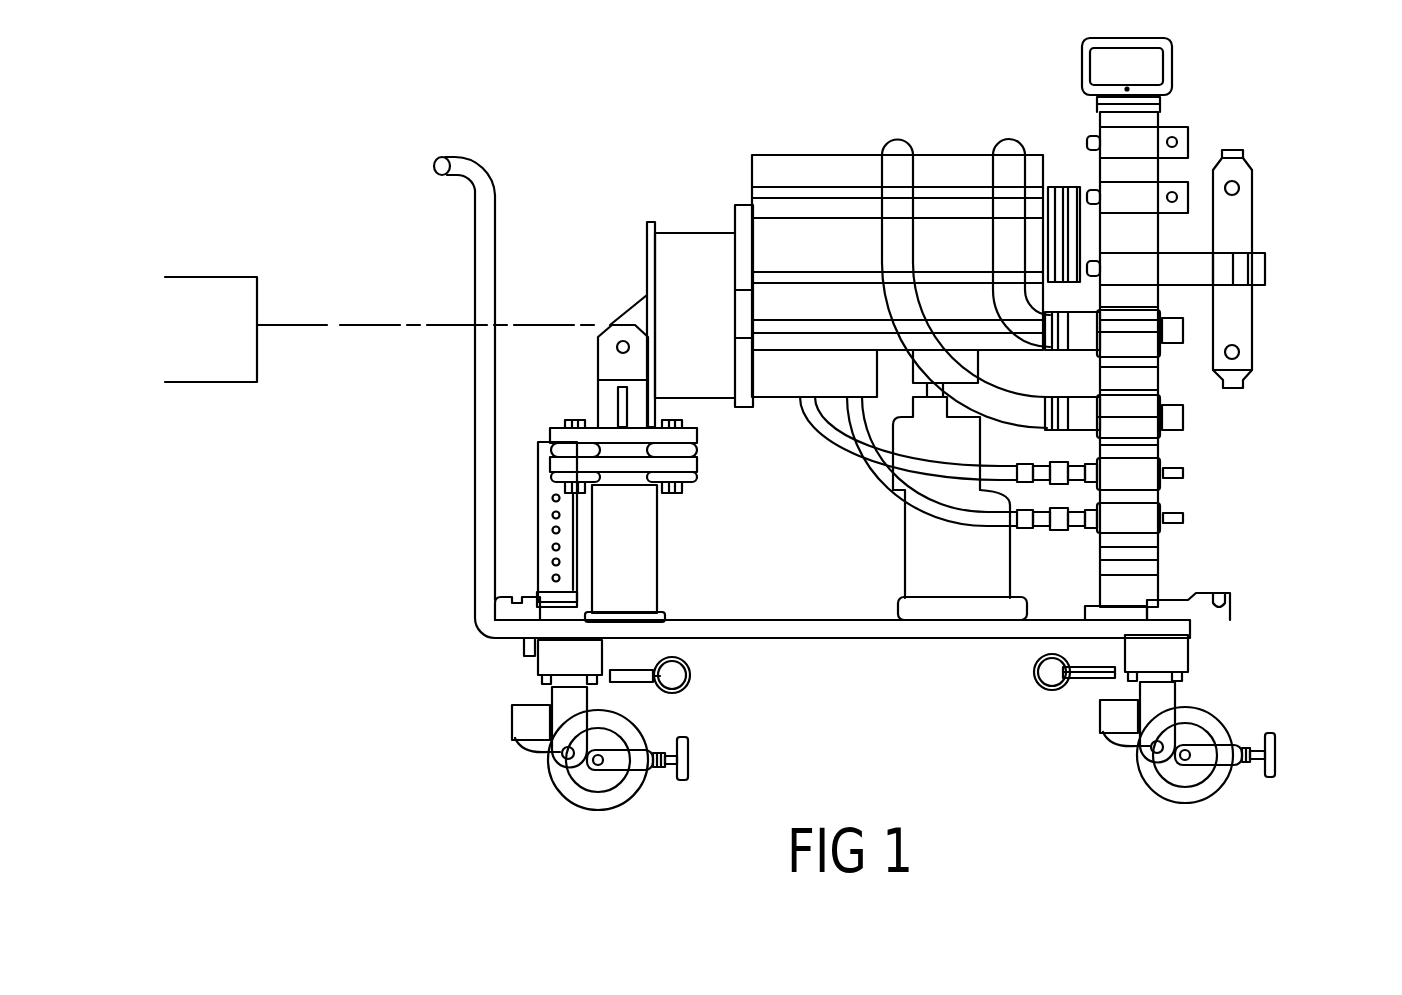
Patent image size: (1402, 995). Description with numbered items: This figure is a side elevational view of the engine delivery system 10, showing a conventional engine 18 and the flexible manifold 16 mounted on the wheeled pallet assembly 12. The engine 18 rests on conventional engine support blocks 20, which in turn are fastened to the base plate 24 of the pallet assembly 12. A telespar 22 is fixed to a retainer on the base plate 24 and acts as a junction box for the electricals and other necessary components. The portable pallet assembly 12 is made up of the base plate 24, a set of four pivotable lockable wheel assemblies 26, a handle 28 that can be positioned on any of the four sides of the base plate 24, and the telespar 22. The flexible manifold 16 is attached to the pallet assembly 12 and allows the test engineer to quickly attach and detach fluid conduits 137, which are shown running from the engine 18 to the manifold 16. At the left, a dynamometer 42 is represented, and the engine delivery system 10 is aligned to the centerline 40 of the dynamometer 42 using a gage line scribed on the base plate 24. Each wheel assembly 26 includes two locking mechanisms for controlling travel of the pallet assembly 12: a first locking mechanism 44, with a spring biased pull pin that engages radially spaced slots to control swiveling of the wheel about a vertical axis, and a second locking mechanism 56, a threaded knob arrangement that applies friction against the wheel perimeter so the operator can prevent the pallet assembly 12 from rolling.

The engine delivery system 10 is at (962, 312).
The pallet assembly 12 is at (871, 483).
The flexible manifold 16 is at (1180, 447).
The engine 18 is at (830, 185).
The engine support blocks 20 is at (642, 553).
The telespar 22 is at (547, 437).
The base plate 24 is at (787, 637).
The pivotable lockable wheel assemblies 26 is at (650, 727).
The handle 28 is at (475, 413).
The centerline of the dynamometer 40 is at (327, 325).
The dynamometer 42 is at (223, 277).
The first locking mechanism 44 is at (695, 673).
The second locking mechanism 56 is at (1250, 738).
The fluid conduits 137 is at (840, 462).